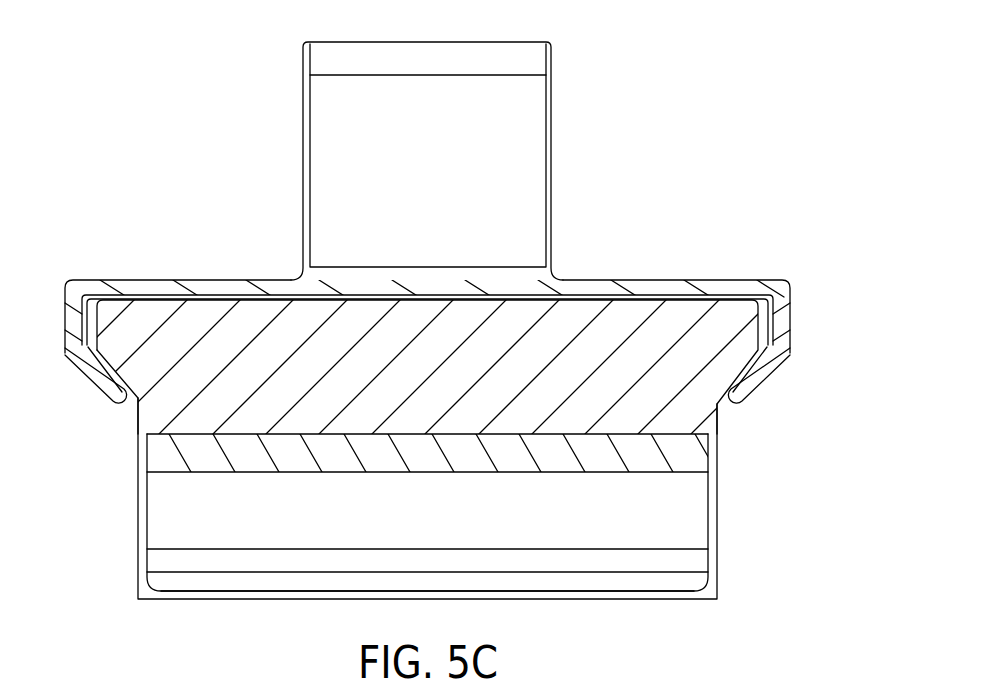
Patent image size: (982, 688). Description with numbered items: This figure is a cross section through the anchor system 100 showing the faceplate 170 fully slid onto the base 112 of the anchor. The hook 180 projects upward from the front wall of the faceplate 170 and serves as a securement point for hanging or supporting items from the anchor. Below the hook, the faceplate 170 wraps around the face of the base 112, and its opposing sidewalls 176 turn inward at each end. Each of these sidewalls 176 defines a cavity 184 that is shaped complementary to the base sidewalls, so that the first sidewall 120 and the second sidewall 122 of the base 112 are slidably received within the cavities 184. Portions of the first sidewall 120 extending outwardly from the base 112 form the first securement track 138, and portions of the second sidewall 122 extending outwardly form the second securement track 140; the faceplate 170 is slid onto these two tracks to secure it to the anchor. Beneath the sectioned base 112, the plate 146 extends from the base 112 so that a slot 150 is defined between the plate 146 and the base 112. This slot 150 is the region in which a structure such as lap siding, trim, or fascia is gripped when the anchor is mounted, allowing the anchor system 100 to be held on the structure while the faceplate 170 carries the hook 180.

The anchor system 100 is at (716, 108).
The hook 180 is at (506, 53).
The faceplate 170 is at (130, 293).
The sidewalls 176 is at (73, 330).
The first sidewall 120 is at (110, 333).
The first securement track 138 is at (427, 292).
The second sidewall 122 is at (737, 346).
The second securement track 140 is at (439, 326).
The cavities 184 is at (88, 346).
The base 112 is at (204, 464).
The slot 150 is at (688, 528).
The plate 146 is at (285, 580).